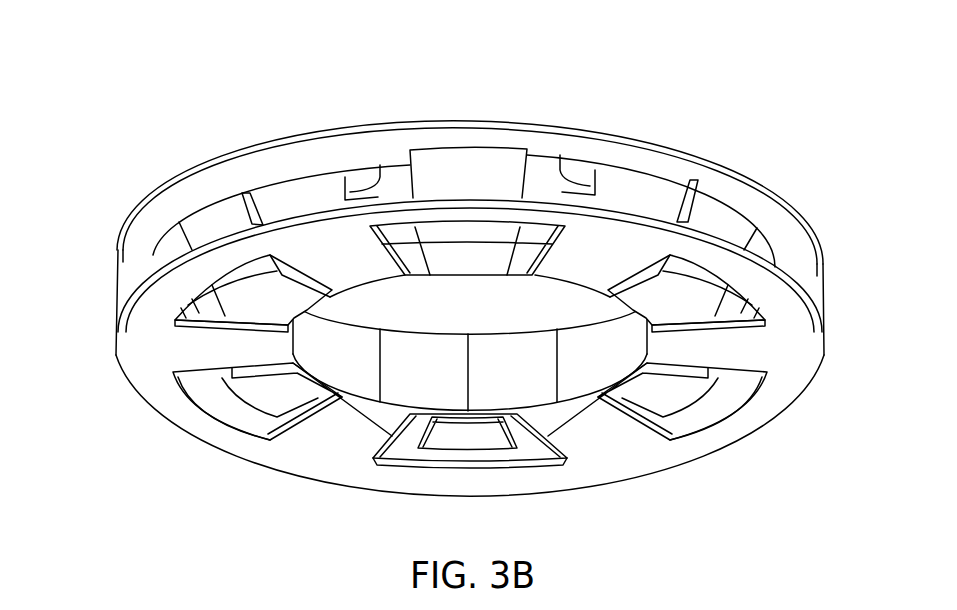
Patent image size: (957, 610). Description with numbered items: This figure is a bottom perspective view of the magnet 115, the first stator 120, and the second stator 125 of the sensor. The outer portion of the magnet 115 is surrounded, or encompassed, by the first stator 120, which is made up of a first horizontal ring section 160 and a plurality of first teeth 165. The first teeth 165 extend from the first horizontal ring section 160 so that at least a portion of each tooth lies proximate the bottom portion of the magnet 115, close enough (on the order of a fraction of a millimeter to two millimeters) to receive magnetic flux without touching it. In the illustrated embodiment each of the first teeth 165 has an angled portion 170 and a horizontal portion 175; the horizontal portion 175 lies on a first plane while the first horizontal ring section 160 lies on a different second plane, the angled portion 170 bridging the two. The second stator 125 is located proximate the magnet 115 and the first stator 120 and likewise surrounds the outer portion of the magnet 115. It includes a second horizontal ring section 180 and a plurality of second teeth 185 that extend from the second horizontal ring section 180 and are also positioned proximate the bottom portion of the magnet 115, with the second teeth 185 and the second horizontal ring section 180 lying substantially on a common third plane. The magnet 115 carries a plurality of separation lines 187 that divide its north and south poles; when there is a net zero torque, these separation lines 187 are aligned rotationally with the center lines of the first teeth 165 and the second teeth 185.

The magnet 115 is at (402, 353).
The first stator 120 is at (793, 189).
The second stator 125 is at (717, 468).
The first horizontal ring section 160 is at (680, 175).
The first teeth 165 is at (263, 183).
The angled portion 170 is at (217, 218).
The horizontal portion 175 is at (297, 307).
The second horizontal ring section 180 is at (783, 397).
The second teeth 185 is at (336, 247).
The separation lines 187 is at (350, 192).